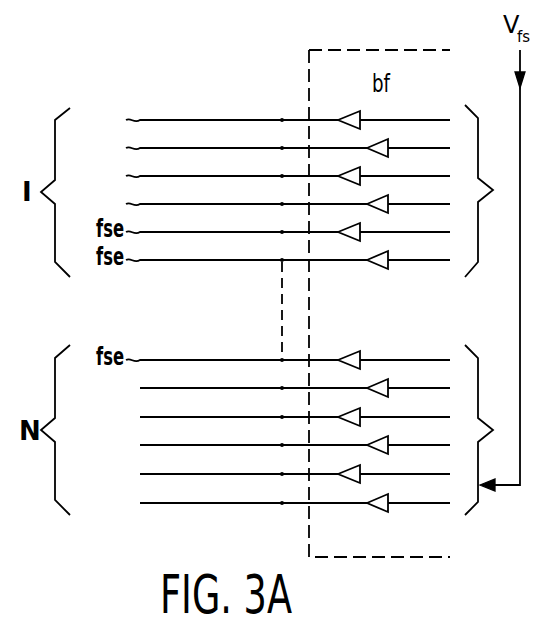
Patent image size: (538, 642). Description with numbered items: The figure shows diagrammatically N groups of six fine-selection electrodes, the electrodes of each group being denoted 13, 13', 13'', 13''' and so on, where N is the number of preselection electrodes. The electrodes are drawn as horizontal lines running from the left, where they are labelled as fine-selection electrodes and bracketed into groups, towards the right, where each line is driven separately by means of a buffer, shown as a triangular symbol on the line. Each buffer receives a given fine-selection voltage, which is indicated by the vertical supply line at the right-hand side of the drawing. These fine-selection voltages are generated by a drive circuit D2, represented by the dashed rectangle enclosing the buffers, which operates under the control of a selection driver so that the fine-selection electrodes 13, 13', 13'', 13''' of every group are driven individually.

The fine-selection electrode 13 is at (273, 88).
The fine-selection electrode 13' is at (273, 117).
The fine-selection electrode 13'' is at (273, 116).
The fine-selection electrode 13''' is at (273, 145).
The drive circuit D2 is at (324, 46).